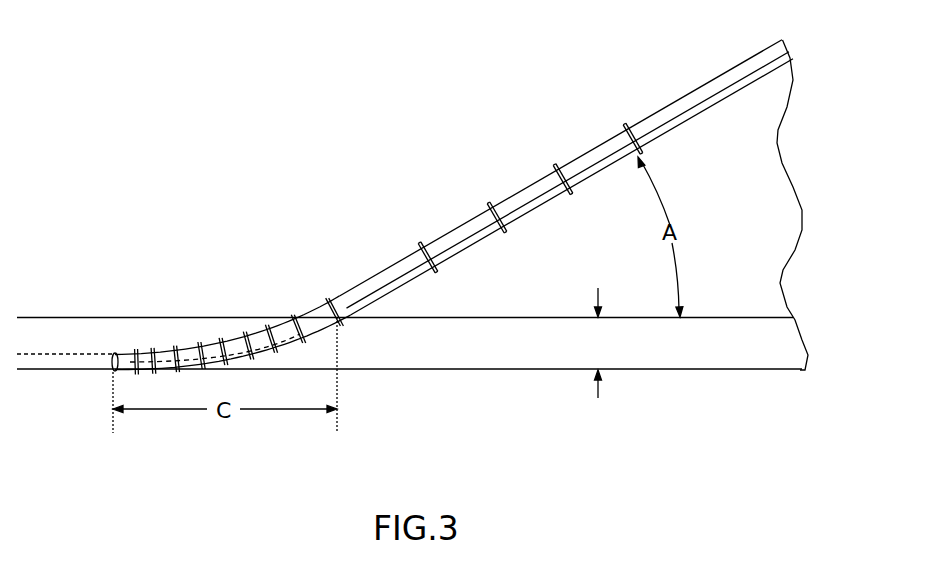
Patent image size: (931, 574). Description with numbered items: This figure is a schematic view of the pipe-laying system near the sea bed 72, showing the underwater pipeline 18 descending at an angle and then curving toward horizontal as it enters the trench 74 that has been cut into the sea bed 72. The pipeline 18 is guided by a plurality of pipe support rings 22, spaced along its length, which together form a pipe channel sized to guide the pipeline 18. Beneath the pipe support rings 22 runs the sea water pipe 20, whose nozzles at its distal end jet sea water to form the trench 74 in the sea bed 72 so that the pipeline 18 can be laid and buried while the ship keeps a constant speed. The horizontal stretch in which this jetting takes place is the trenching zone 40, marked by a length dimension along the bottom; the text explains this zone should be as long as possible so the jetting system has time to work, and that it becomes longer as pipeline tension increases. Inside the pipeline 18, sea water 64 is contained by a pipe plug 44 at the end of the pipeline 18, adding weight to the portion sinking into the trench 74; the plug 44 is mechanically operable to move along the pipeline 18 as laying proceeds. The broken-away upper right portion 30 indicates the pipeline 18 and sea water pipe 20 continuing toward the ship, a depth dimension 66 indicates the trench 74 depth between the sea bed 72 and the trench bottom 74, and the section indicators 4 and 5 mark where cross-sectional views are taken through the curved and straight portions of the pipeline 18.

The underwater pipeline 18 is at (594, 148).
The sea water pipe 20 is at (692, 117).
The pipe support rings 22 is at (492, 205).
The break region of tube 30 is at (690, 208).
The trenching zone 40 is at (358, 398).
The pipe plug 44 is at (112, 358).
The sea water 64 is at (184, 352).
The channel gap 66 is at (575, 343).
The sea bed 72 is at (705, 317).
The trench 74 is at (705, 369).
The section line 4 is at (264, 338).
The section line 5 is at (557, 184).